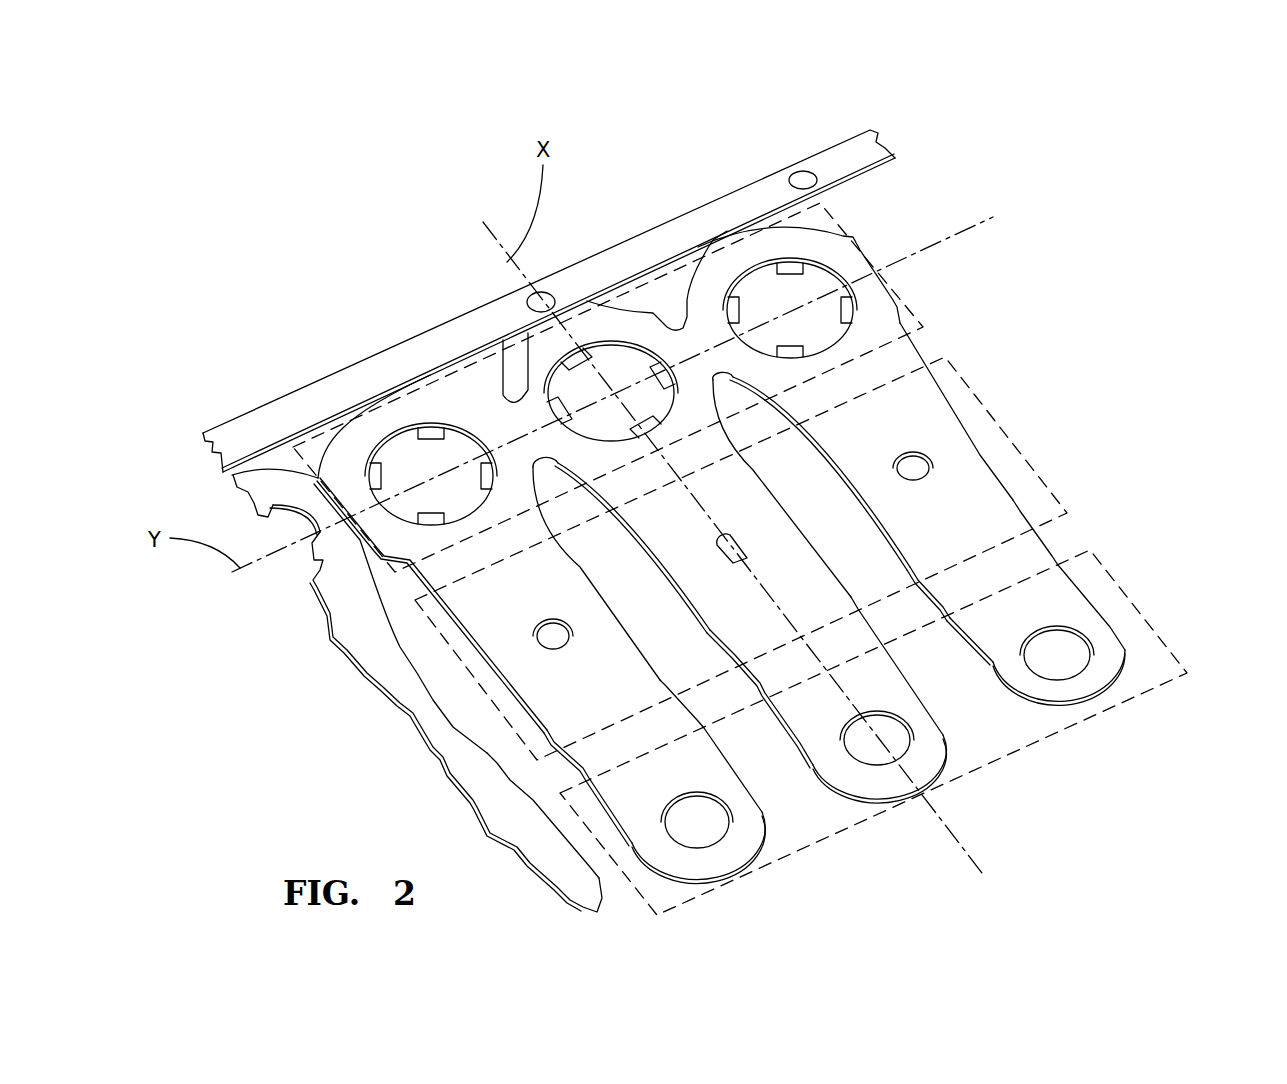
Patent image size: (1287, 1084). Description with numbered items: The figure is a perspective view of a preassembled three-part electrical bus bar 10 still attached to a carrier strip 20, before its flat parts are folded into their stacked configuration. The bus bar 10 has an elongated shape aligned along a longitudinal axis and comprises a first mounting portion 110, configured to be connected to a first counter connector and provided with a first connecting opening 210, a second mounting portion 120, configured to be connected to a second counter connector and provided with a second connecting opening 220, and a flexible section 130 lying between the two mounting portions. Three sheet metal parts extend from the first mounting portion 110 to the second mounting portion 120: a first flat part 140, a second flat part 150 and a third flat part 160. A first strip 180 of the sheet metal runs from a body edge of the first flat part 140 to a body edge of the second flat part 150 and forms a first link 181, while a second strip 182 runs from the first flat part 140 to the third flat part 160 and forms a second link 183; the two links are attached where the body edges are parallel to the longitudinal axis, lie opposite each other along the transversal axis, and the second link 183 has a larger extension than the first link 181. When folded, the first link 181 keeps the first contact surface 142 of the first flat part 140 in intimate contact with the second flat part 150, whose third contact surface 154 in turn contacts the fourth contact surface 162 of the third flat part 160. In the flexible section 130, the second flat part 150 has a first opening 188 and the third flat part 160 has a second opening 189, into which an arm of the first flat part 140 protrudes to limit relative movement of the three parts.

The electrical bus bar 10 is at (1113, 715).
The carrier strip 20 is at (823, 160).
The first mounting portion 110 is at (612, 344).
The second mounting portion 120 is at (1101, 610).
The flexible section 130 is at (1032, 506).
The first flat part 140 is at (733, 502).
The first contact surface 142 is at (740, 613).
The second flat part 150 is at (893, 440).
The third contact surface 154 is at (1025, 500).
The third flat part 160 is at (543, 608).
The fourth contact surface 162 is at (577, 697).
The first strip 180 is at (657, 242).
The first link 181 is at (685, 313).
The second strip 182 is at (405, 353).
The second link 183 is at (500, 392).
The first opening 188 is at (918, 462).
The second opening 189 is at (550, 637).
The first connecting opening 210 is at (768, 302).
The second connecting opening 220 is at (1060, 663).